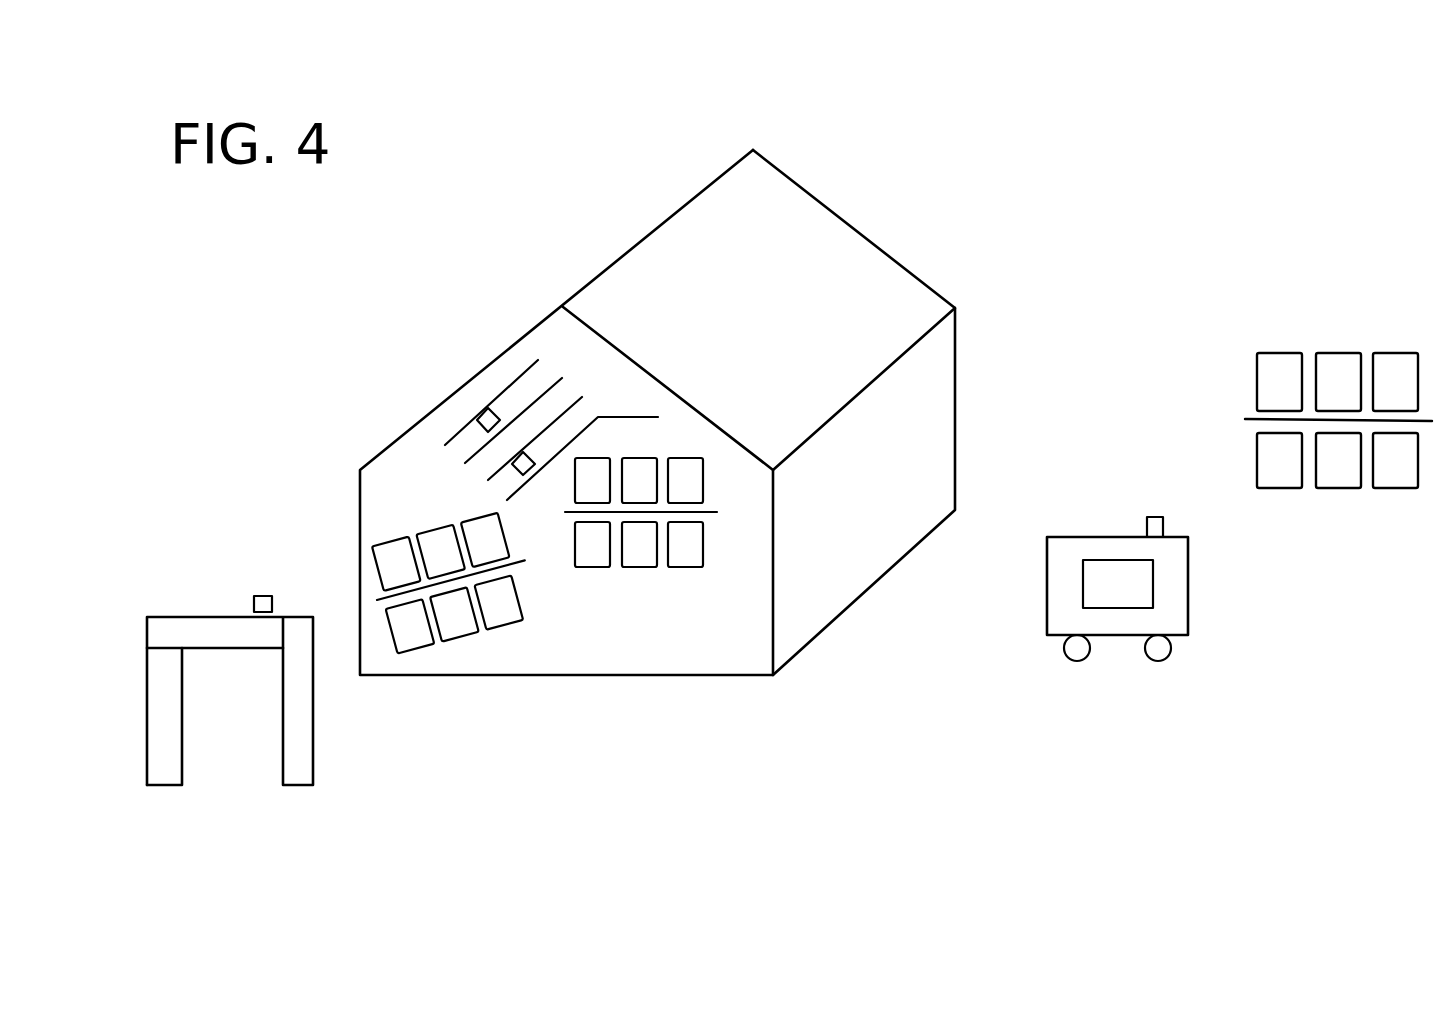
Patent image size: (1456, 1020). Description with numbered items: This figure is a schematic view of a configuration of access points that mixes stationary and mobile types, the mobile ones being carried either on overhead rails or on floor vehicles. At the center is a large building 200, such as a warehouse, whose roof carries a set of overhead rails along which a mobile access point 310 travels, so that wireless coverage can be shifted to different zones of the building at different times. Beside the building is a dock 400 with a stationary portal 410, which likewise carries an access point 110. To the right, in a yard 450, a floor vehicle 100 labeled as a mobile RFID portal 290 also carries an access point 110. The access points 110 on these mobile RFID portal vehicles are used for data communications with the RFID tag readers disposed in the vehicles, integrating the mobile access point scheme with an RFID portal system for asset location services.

The mobile RFID portal vehicle 100 is at (1108, 558).
The access point 110 is at (524, 450).
The warehouse building 200 is at (803, 188).
The mobile RFID portal 290 is at (1188, 582).
The mobile access point 310 is at (486, 408).
The dock 400 is at (217, 598).
The stationary portal 410 is at (228, 616).
The yard 450 is at (1168, 709).